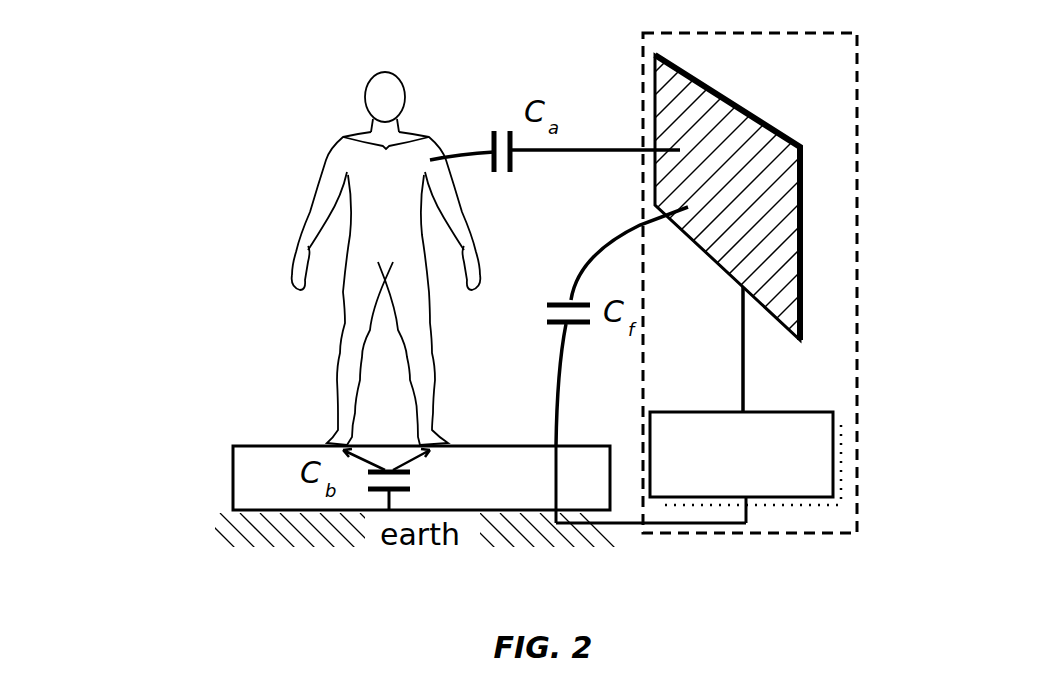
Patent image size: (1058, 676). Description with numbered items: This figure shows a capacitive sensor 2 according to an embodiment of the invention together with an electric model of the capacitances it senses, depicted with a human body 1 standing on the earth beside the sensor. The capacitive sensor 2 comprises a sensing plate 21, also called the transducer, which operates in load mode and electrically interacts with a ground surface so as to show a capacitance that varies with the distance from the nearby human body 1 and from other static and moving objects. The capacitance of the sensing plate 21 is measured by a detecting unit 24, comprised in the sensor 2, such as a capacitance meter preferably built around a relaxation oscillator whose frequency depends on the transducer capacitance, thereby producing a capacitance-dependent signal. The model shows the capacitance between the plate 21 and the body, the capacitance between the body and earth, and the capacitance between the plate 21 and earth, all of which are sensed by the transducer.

The human body 1 is at (146, 180).
The capacitive sensor 2 is at (860, 34).
The sensing plate 21 is at (707, 82).
The detecting unit 24 is at (663, 412).